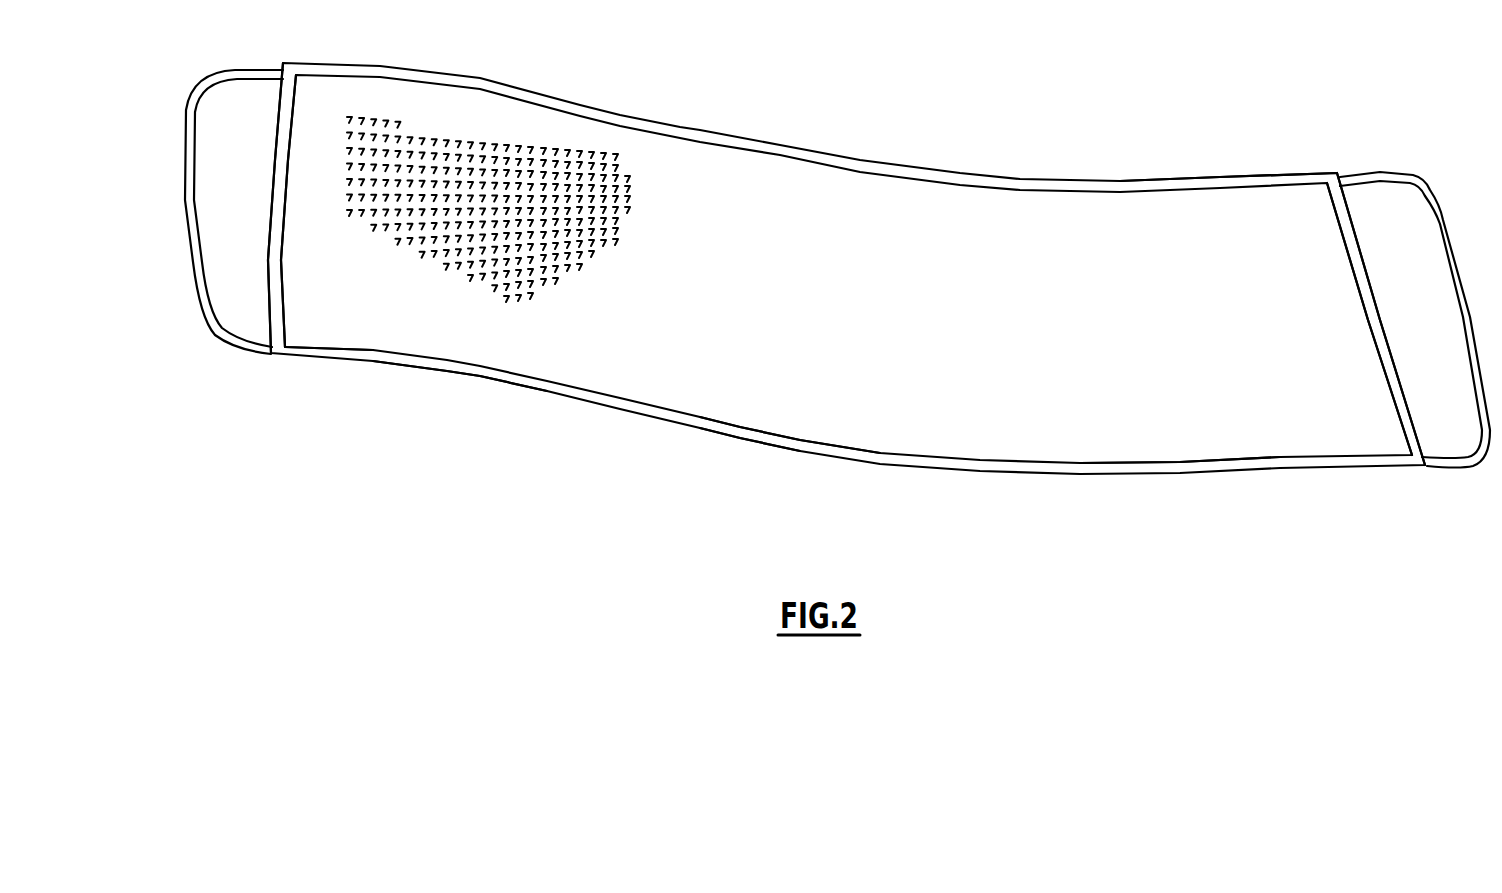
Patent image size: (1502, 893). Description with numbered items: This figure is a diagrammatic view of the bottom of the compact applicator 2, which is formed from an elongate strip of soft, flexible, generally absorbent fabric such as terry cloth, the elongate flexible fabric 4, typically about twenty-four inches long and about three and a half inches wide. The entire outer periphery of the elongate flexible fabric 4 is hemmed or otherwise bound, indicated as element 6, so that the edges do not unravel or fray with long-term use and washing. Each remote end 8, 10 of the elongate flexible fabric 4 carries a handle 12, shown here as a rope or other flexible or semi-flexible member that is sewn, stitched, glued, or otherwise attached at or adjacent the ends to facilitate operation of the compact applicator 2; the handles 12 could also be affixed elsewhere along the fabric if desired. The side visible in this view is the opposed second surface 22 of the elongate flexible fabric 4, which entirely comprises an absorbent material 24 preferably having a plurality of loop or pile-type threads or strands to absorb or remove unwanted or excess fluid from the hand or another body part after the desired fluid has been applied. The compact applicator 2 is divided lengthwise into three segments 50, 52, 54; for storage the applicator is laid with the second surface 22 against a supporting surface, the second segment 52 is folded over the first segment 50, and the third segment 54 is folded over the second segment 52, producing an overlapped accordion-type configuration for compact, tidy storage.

The compact applicator 2 is at (712, 112).
The elongate flexible fabric 4 is at (420, 370).
The hem or binding 6 is at (738, 427).
The remote end 8 is at (268, 297).
The remote end 10 is at (1413, 423).
The handle 12 is at (190, 98).
The second surface 22 is at (1213, 205).
The absorbent material 24 is at (414, 114).
The first segment 50 is at (375, 337).
The second segment 52 is at (820, 400).
The third segment 54 is at (1225, 423).